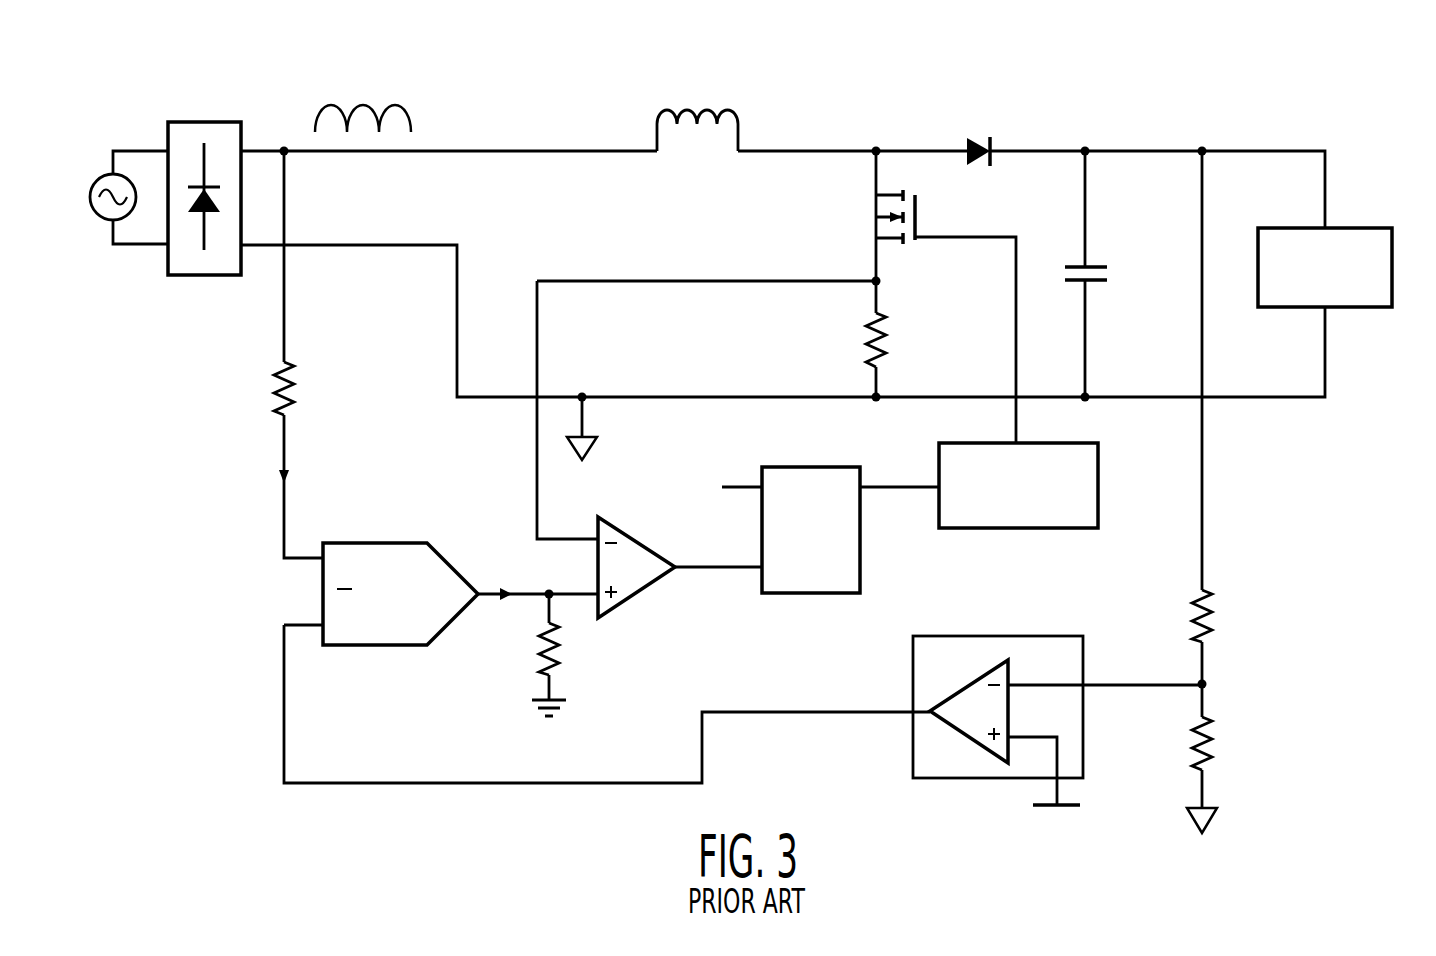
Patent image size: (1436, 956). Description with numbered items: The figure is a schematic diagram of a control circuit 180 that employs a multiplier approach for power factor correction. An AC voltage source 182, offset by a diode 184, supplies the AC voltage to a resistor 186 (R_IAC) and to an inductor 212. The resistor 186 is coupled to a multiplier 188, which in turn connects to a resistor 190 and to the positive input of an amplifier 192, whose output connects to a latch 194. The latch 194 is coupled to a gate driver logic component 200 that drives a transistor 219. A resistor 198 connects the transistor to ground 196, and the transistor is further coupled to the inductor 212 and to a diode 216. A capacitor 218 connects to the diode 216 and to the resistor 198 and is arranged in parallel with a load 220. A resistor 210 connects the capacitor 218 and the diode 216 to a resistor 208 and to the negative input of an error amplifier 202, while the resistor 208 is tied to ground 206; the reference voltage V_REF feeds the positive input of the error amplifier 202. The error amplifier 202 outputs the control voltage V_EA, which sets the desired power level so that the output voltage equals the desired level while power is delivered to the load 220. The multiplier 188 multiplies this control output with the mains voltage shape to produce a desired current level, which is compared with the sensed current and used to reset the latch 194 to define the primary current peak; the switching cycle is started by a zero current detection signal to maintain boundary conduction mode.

The control circuit 180 is at (1366, 110).
The AC voltage source 182 is at (98, 182).
The diode 184 is at (195, 280).
The resistor 186 is at (275, 397).
The multiplier 188 is at (398, 543).
The resistor 190 is at (537, 653).
The amplifier 192 is at (630, 598).
The latch 194 is at (830, 541).
The ground 196 is at (597, 447).
The resistor 198 is at (868, 348).
The gate driver logic component 200 is at (1100, 495).
The error amplifier 202 is at (963, 688).
The ground 206 is at (1215, 820).
The resistor 208 is at (1213, 740).
The resistor 210 is at (1212, 617).
The inductor 212 is at (657, 118).
The diode 216 is at (967, 148).
The capacitor 218 is at (1095, 267).
The transistor 219 is at (875, 217).
The load 220 is at (1350, 308).